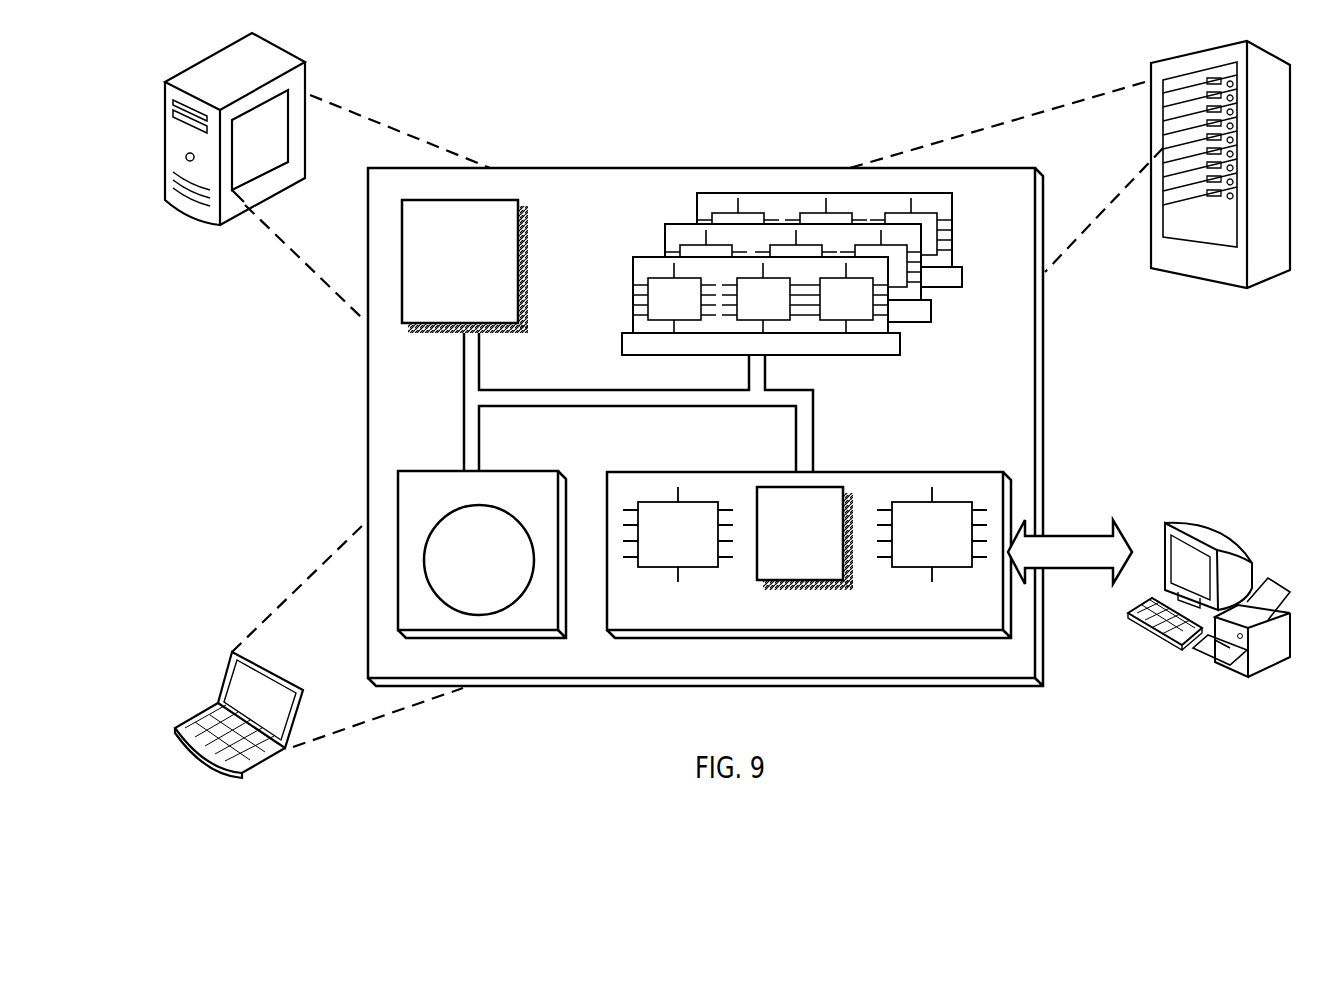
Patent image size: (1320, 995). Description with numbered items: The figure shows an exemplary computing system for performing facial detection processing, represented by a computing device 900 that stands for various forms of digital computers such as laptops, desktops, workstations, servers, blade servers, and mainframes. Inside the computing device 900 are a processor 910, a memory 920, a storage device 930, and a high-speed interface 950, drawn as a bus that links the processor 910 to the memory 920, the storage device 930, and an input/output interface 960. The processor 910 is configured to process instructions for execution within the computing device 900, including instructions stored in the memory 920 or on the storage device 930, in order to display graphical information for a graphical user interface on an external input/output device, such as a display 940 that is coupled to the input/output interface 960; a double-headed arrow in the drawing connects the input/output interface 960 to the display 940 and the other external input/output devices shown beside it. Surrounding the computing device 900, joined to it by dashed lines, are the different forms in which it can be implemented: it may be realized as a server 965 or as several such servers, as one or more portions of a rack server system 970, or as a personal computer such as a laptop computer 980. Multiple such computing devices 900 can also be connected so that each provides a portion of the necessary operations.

The computing device 900 is at (546, 60).
The processor 910 is at (465, 266).
The memory 920 is at (970, 187).
The storage device 930 is at (482, 554).
The display 940 is at (1167, 523).
The high-speed interface 950 is at (633, 408).
The input/output interface 960 is at (809, 555).
The server 965 is at (327, 175).
The rack server system 970 is at (1070, 164).
The laptop computer 980 is at (319, 650).